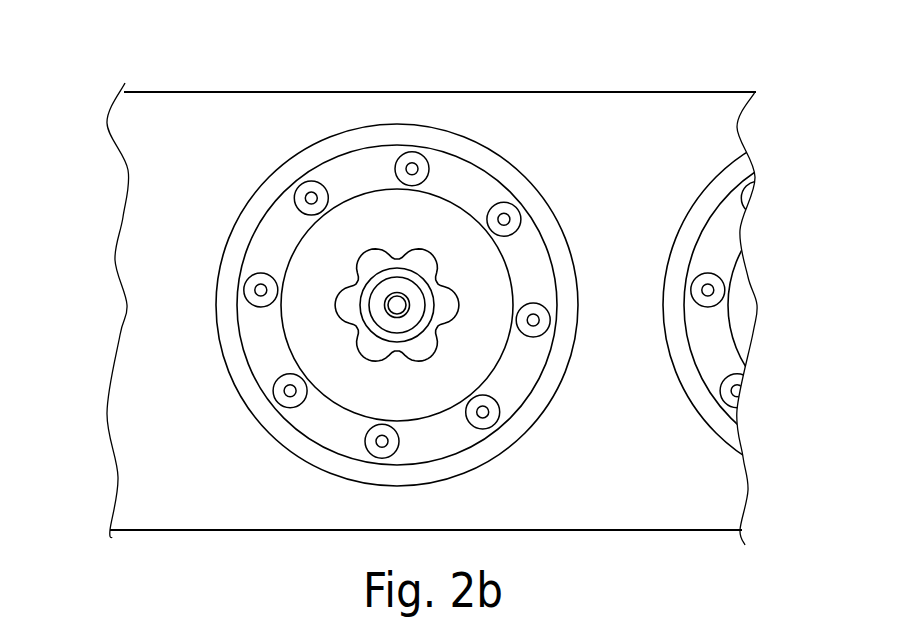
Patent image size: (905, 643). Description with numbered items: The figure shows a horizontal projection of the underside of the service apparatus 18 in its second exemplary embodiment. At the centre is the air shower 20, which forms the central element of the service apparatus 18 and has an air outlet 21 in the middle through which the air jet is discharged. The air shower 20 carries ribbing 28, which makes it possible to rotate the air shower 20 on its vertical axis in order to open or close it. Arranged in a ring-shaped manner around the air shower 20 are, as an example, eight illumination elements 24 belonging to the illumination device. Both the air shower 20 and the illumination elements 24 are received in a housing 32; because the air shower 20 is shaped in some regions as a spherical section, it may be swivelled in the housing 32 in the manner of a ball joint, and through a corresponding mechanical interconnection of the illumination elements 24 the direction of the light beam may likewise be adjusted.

The service apparatus 18 is at (511, 70).
The air shower 20 is at (490, 270).
The air outlet 21 is at (395, 303).
The illumination elements 24 is at (508, 215).
The ribbing 28 is at (370, 345).
The housing 32 is at (540, 510).